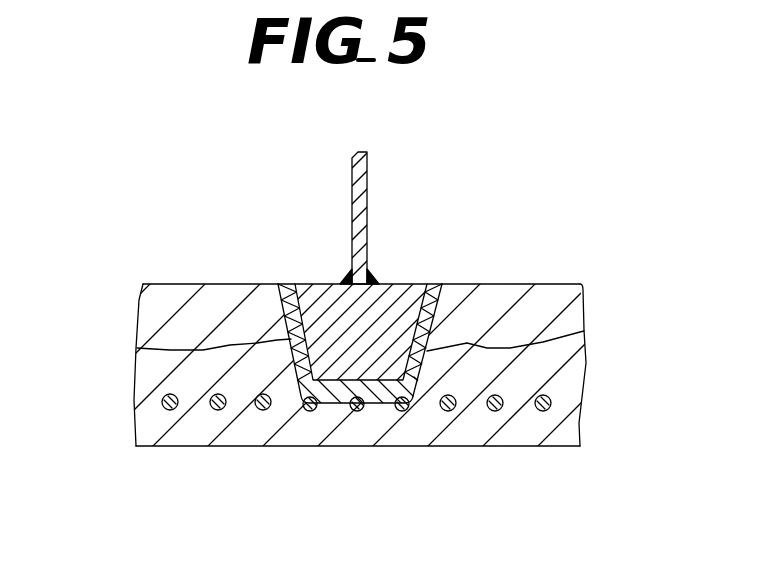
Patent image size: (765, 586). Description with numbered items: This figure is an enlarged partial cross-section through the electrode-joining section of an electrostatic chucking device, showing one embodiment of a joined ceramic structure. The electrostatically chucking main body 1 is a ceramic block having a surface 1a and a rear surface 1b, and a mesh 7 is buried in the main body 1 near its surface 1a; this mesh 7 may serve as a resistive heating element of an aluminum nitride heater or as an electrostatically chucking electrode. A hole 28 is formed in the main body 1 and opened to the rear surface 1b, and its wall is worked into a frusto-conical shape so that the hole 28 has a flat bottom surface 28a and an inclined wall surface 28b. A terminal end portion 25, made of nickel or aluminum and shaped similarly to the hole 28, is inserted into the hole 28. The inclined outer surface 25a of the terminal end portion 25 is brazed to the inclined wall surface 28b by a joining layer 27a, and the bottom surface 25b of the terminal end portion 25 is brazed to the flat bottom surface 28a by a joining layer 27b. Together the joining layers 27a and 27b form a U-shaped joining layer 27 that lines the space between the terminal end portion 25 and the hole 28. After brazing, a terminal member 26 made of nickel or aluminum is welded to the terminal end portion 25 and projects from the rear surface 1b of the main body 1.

The electrostatically chucking main body 1 is at (239, 378).
The surface 1a is at (197, 446).
The rear surface 1b is at (193, 283).
The mesh 7 is at (497, 410).
The terminal end portion 25 is at (384, 305).
The inclined outer surface 25a is at (576, 337).
The bottom surface 25b is at (389, 409).
The terminal member 26 is at (368, 185).
The U-shaped joining layer 27 is at (342, 377).
The joining layer 27a is at (287, 307).
The joining layer 27b is at (332, 407).
The hole 28 is at (441, 323).
The flat bottom surface 28a is at (374, 406).
The inclined wall surface 28b is at (140, 347).